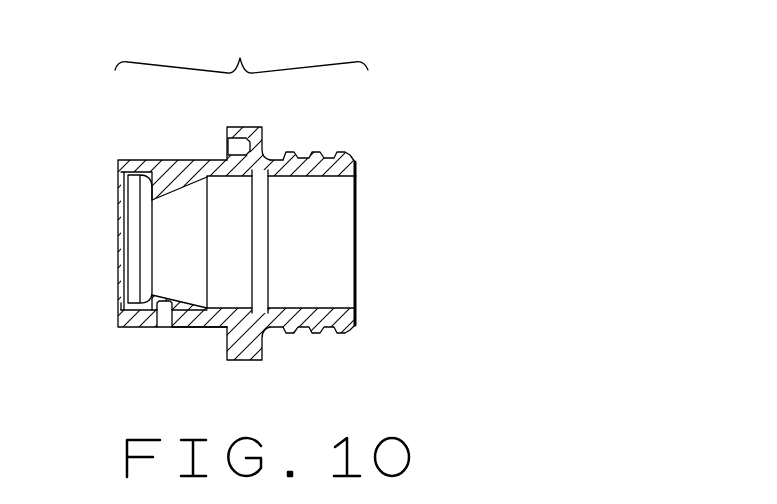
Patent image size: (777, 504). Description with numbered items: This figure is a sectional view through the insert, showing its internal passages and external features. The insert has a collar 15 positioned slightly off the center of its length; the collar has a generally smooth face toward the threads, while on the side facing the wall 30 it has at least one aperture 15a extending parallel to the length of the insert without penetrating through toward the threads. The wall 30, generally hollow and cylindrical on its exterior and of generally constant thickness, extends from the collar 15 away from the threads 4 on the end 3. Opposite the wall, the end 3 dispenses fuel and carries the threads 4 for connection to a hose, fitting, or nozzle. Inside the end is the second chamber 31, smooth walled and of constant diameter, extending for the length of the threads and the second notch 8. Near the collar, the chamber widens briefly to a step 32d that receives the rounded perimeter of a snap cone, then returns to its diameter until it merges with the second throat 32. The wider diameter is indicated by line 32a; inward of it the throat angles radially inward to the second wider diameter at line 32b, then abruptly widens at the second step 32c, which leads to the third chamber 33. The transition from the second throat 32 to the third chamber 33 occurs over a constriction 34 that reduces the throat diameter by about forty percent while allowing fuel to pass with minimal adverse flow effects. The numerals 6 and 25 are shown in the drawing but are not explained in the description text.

The end 3 is at (357, 288).
The threads 4 is at (330, 152).
The connector 6 is at (241, 47).
The second notch 8 is at (267, 158).
The collar 15 is at (245, 127).
The aperture 15a is at (228, 146).
The groove 25 is at (163, 327).
The wall 30 is at (152, 172).
The second chamber 31 is at (332, 202).
The second throat 32 is at (200, 253).
The wider diameter 32a is at (235, 205).
The second wider diameter 32b is at (170, 258).
The second step 32c is at (130, 303).
The step 32d is at (264, 308).
The third chamber 33 is at (130, 213).
The constriction 34 is at (197, 327).